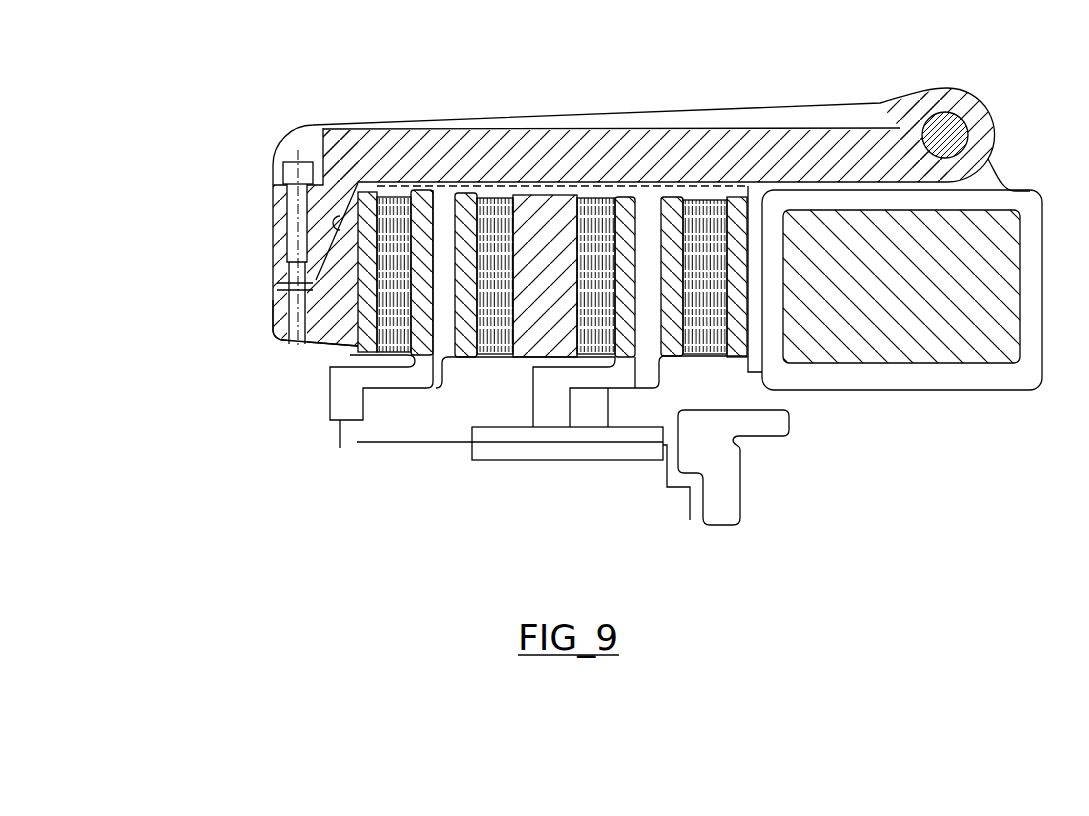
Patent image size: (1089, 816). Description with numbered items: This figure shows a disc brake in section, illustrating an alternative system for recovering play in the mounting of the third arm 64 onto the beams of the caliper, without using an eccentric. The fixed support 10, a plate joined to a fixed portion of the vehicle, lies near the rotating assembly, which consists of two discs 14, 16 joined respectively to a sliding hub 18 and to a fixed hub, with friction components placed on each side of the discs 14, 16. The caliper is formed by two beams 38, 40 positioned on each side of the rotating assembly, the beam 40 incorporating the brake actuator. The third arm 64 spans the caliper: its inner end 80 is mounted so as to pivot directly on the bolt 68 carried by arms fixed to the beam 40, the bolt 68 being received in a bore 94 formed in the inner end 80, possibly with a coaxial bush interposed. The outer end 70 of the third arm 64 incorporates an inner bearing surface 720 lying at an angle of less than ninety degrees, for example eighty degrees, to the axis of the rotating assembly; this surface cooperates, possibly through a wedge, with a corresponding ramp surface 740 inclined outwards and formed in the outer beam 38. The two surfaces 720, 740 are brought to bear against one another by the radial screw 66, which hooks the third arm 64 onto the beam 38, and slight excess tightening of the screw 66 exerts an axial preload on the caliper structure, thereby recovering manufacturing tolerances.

The fixed support 10 is at (727, 455).
The disc 14 is at (654, 213).
The disc 16 is at (446, 213).
The sliding hub 18 is at (553, 410).
The beam 38 is at (330, 333).
The beam 40 is at (928, 401).
The third arm 64 is at (632, 140).
The radial screw 66 is at (295, 186).
The bolt 68 is at (960, 138).
The outer end 70 is at (282, 202).
The inner end 80 is at (892, 132).
The bore 94 is at (955, 142).
The inner bearing surface 720 is at (306, 239).
The ramp surface 740 is at (286, 263).